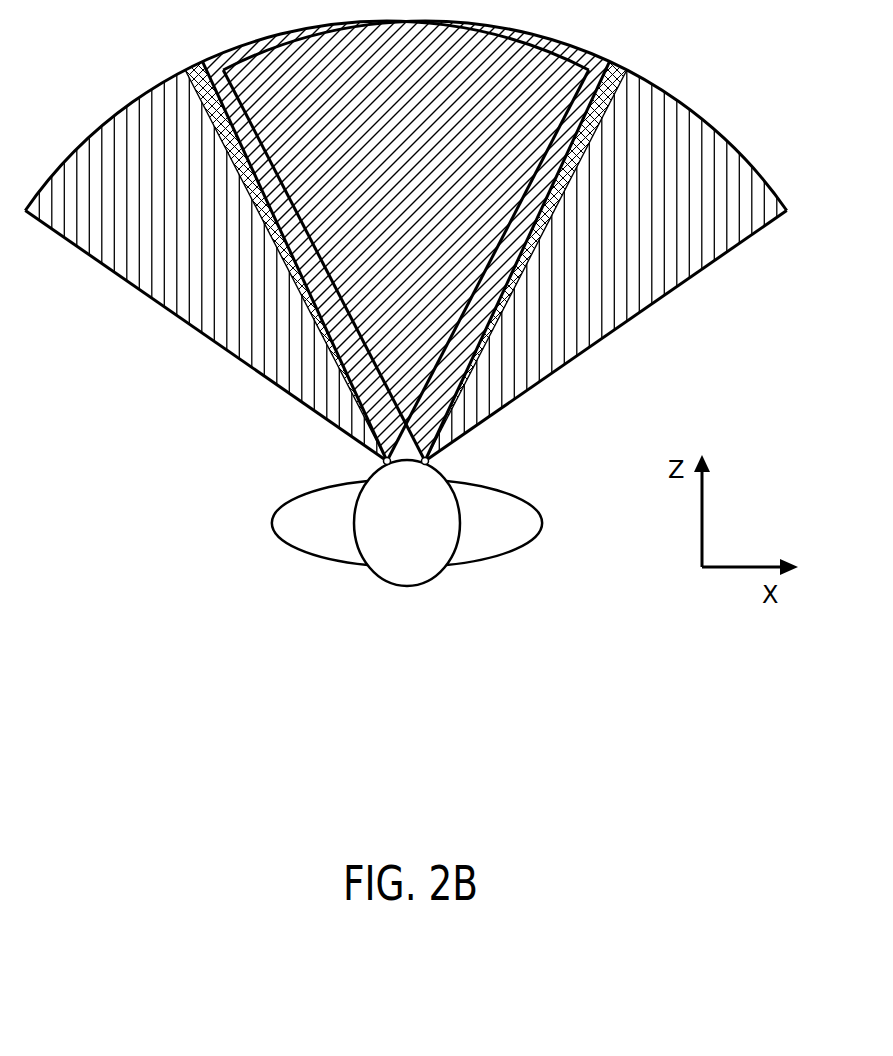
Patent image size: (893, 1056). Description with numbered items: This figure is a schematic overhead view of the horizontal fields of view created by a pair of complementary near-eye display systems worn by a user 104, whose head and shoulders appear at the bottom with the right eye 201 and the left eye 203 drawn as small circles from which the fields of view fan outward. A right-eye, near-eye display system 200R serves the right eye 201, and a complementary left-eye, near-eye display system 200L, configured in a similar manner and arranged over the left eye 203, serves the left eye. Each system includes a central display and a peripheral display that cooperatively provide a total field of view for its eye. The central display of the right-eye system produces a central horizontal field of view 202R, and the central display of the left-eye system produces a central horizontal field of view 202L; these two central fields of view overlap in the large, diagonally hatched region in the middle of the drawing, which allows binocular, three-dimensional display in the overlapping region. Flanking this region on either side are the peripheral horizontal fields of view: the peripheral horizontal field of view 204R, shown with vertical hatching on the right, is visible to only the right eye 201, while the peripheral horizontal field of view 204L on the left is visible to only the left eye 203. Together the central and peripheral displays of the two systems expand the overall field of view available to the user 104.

The user 104 is at (543, 522).
The left-eye, near-eye display system 200L is at (358, 455).
The right-eye, near-eye display system 200R is at (454, 455).
The right eye 201 is at (429, 462).
The left eye 203 is at (383, 462).
The central horizontal field of view 202L is at (222, 52).
The central horizontal field of view 202R is at (590, 52).
The peripheral horizontal field of view 204L is at (202, 331).
The peripheral horizontal field of view 204R is at (610, 331).